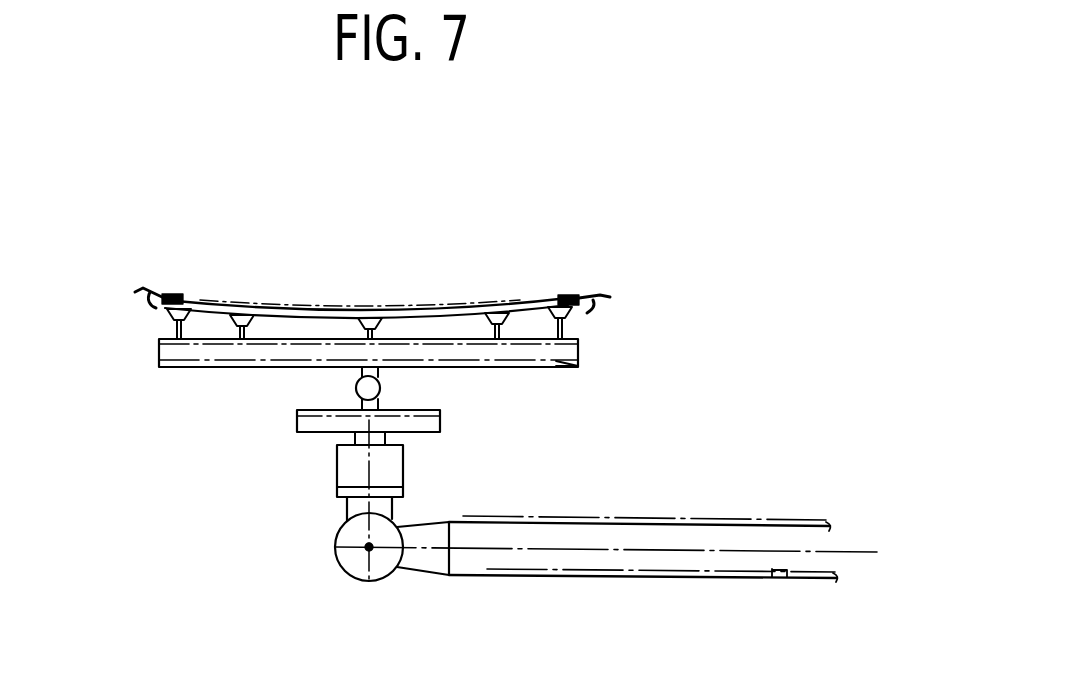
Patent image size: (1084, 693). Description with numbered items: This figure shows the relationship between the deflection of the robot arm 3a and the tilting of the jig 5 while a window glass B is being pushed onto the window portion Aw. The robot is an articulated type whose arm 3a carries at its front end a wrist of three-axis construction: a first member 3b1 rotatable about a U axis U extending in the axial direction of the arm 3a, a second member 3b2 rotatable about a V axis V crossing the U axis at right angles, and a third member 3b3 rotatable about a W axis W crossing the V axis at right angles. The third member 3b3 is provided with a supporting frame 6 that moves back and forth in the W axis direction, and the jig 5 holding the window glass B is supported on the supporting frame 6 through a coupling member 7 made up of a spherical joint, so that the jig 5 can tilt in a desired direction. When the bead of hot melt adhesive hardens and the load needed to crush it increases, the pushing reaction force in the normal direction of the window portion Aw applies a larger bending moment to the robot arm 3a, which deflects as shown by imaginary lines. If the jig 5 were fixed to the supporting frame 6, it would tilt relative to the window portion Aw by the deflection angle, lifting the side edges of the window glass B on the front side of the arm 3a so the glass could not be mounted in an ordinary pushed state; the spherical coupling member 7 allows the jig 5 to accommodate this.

The jig 5 is at (159, 347).
The supporting frame 6 is at (433, 422).
The coupling member 7 is at (380, 387).
The robot arm 3a is at (573, 522).
The first member 3b1 is at (425, 527).
The second member 3b2 is at (347, 505).
The third member 3b3 is at (355, 468).
The window portion Aw is at (180, 297).
The window glass B is at (287, 309).
The U axis U is at (336, 547).
The V axis V is at (372, 550).
The W axis W is at (369, 581).